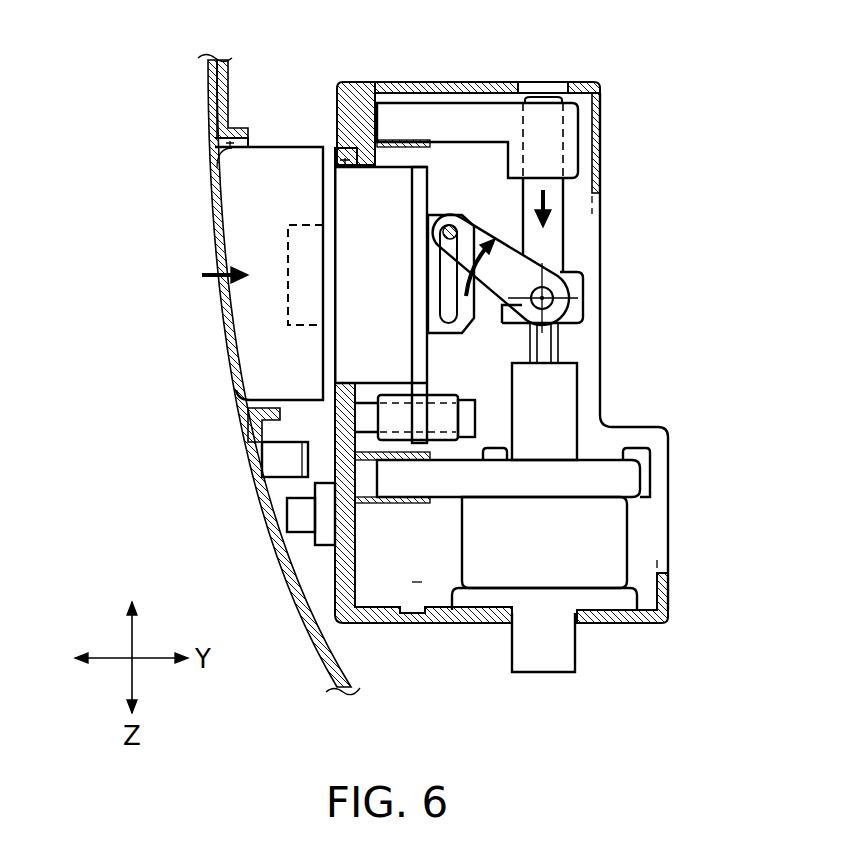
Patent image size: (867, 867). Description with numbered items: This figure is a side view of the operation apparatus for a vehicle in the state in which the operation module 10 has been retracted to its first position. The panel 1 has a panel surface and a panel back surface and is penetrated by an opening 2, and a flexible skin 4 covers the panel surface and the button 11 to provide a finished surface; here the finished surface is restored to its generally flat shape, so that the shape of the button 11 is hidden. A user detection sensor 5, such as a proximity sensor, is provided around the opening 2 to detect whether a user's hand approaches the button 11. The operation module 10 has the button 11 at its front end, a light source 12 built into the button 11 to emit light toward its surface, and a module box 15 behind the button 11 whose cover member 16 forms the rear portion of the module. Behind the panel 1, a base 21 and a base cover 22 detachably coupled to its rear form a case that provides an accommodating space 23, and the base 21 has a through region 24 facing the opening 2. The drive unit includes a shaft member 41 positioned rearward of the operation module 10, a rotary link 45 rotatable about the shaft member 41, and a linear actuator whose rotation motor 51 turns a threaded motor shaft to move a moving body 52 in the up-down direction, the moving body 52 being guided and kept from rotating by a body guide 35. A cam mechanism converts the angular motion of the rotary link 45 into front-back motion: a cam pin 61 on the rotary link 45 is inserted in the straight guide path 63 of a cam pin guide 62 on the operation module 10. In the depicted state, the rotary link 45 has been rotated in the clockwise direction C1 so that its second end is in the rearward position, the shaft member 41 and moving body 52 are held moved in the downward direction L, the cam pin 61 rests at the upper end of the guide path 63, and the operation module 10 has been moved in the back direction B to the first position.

The panel 1 is at (228, 86).
The opening 2 is at (212, 173).
The skin 4 is at (282, 567).
The user detection sensor 5 is at (267, 460).
The operation module 10 is at (277, 140).
The button 11 is at (238, 220).
The light source 12 is at (287, 303).
The module box 15 is at (387, 175).
The cover member 16 is at (418, 173).
The base 21 is at (338, 110).
The base cover 22 is at (488, 86).
The accommodating space 23 is at (417, 584).
The through region 24 is at (363, 178).
The body guide 35 is at (580, 140).
The shaft member 41 is at (556, 292).
The rotary link 45 is at (530, 268).
The rotation motor 51 is at (492, 574).
The moving body 52 is at (556, 313).
The cam pin 61 is at (452, 224).
The cam pin guide 62 is at (466, 325).
The guide path 63 is at (448, 290).
The back direction B is at (202, 277).
The clockwise direction C1 is at (455, 257).
The downward direction L is at (565, 196).